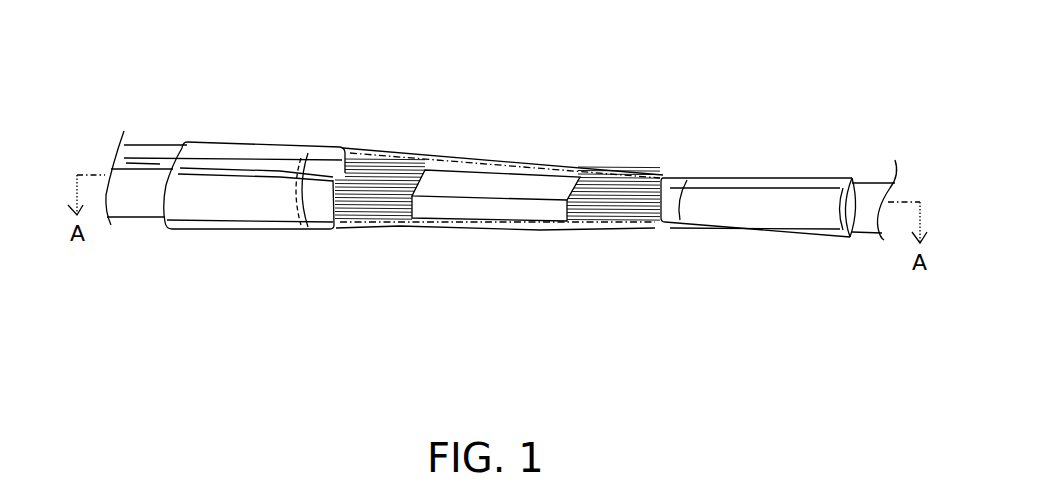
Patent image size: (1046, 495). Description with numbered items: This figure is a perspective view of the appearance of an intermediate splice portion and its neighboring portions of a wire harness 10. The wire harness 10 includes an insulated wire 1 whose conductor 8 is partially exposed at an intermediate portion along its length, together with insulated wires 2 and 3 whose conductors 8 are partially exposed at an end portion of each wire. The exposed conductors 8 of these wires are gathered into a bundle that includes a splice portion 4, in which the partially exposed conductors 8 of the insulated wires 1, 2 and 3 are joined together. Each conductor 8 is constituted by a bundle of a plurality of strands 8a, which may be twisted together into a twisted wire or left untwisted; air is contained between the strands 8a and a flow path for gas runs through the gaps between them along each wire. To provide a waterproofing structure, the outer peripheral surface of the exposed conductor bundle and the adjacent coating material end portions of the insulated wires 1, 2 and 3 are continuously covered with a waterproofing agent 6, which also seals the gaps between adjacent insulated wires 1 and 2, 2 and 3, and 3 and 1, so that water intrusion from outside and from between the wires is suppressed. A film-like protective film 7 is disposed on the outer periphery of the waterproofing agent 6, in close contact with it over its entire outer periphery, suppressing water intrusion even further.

The insulated wire 1 is at (150, 140).
The insulated wire 2 is at (143, 163).
The insulated wire 3 is at (145, 205).
The splice portion 4 is at (472, 210).
The waterproofing agent 6 is at (692, 205).
The protective film 7 is at (227, 230).
The conductor 8 is at (372, 178).
The strands 8a is at (353, 197).
The wire harness 10 is at (907, 427).